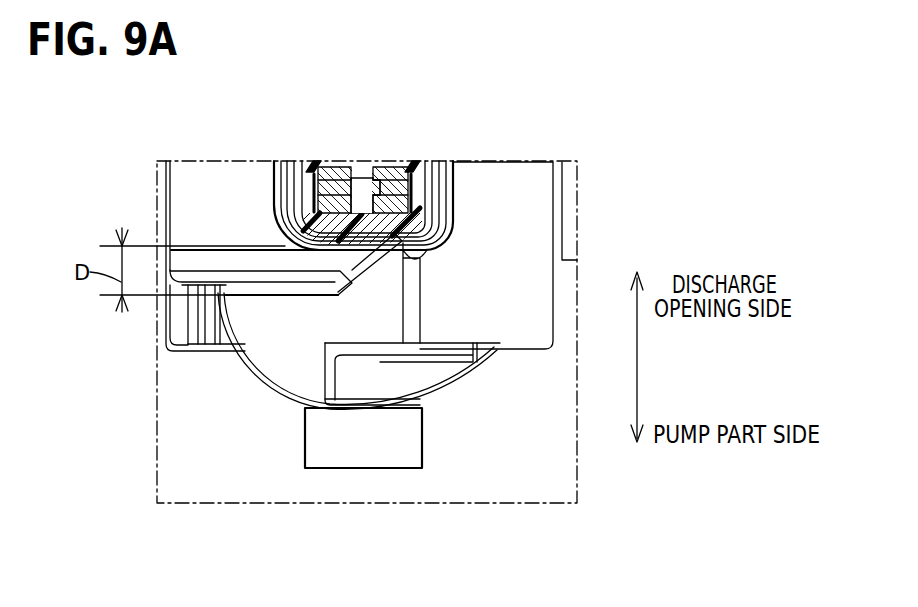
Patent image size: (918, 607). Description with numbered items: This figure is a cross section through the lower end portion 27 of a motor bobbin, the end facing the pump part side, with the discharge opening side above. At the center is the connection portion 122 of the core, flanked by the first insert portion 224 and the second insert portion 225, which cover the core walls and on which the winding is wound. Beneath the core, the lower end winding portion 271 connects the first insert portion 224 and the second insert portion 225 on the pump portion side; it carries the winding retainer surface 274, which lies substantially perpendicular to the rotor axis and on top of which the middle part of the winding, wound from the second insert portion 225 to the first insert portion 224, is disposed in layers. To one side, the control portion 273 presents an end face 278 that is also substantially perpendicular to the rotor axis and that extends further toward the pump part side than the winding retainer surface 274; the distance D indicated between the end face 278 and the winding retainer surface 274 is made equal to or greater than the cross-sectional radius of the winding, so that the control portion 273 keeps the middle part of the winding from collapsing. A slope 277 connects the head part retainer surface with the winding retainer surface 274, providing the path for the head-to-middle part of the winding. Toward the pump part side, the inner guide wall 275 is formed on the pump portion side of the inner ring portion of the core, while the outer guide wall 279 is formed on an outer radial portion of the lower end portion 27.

The lower end portion 27 is at (446, 270).
The lower end winding portion 271 is at (440, 238).
The connection portion 122 is at (366, 175).
The second insert portion 225 is at (311, 176).
The first insert portion 224 is at (409, 172).
The control portion 273 is at (296, 309).
The end face 278 is at (268, 297).
The slope 277 is at (356, 292).
The winding retainer surface 274 is at (407, 262).
The inner guide wall 275 is at (373, 425).
The outer guide wall 279 is at (330, 485).